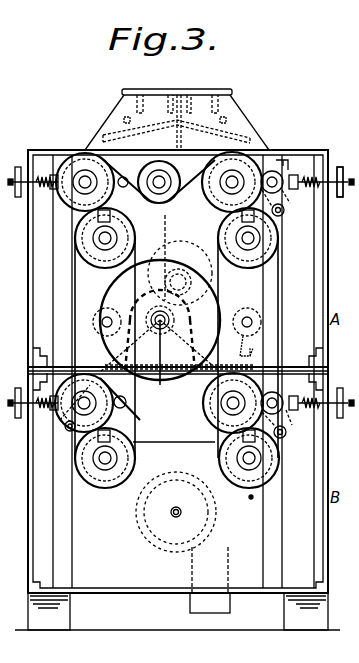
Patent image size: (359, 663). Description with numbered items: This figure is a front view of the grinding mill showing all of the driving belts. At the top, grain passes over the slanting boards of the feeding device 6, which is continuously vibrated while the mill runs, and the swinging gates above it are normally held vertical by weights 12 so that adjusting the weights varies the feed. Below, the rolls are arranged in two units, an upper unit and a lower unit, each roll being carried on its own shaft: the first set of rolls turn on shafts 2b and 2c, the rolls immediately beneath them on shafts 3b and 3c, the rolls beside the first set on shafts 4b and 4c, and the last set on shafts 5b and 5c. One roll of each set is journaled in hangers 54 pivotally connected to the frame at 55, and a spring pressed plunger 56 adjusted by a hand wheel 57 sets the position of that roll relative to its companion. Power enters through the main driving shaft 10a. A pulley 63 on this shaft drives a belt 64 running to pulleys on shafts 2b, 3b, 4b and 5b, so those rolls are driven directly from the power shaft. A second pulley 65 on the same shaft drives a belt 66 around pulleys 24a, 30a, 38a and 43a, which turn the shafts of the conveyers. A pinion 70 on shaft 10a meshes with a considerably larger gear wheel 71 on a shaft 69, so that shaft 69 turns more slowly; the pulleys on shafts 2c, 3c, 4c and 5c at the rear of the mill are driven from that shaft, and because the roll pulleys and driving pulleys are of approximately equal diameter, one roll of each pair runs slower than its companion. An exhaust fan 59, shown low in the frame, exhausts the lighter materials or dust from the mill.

The weights 12 is at (233, 96).
The feeding device 6 is at (152, 127).
The shaft 4b is at (84, 172).
The shaft 4c is at (122, 177).
The shaft 2b is at (262, 160).
The shaft 2c is at (232, 182).
The hangers 54 is at (285, 172).
The hand wheel 57 is at (339, 168).
The spring pressed plunger 56 is at (286, 189).
The pivot 55 is at (284, 211).
The pulley 38a is at (134, 240).
The pulley 24a is at (274, 239).
The belt 66 is at (174, 332).
The gear wheel 71 is at (182, 258).
The belt 64 is at (264, 290).
The pulley 63 is at (212, 310).
The shaft 69 is at (207, 288).
The second pulley 65 is at (111, 315).
The pinion 70 is at (228, 332).
The main driving shaft 10a is at (160, 359).
The shaft 5c is at (126, 405).
The shaft 3b is at (232, 403).
The shaft 5b is at (65, 427).
The shaft 3c is at (287, 432).
The pulley 43a is at (82, 477).
The pulley 30a is at (273, 465).
The exhaust fan 59 is at (158, 536).